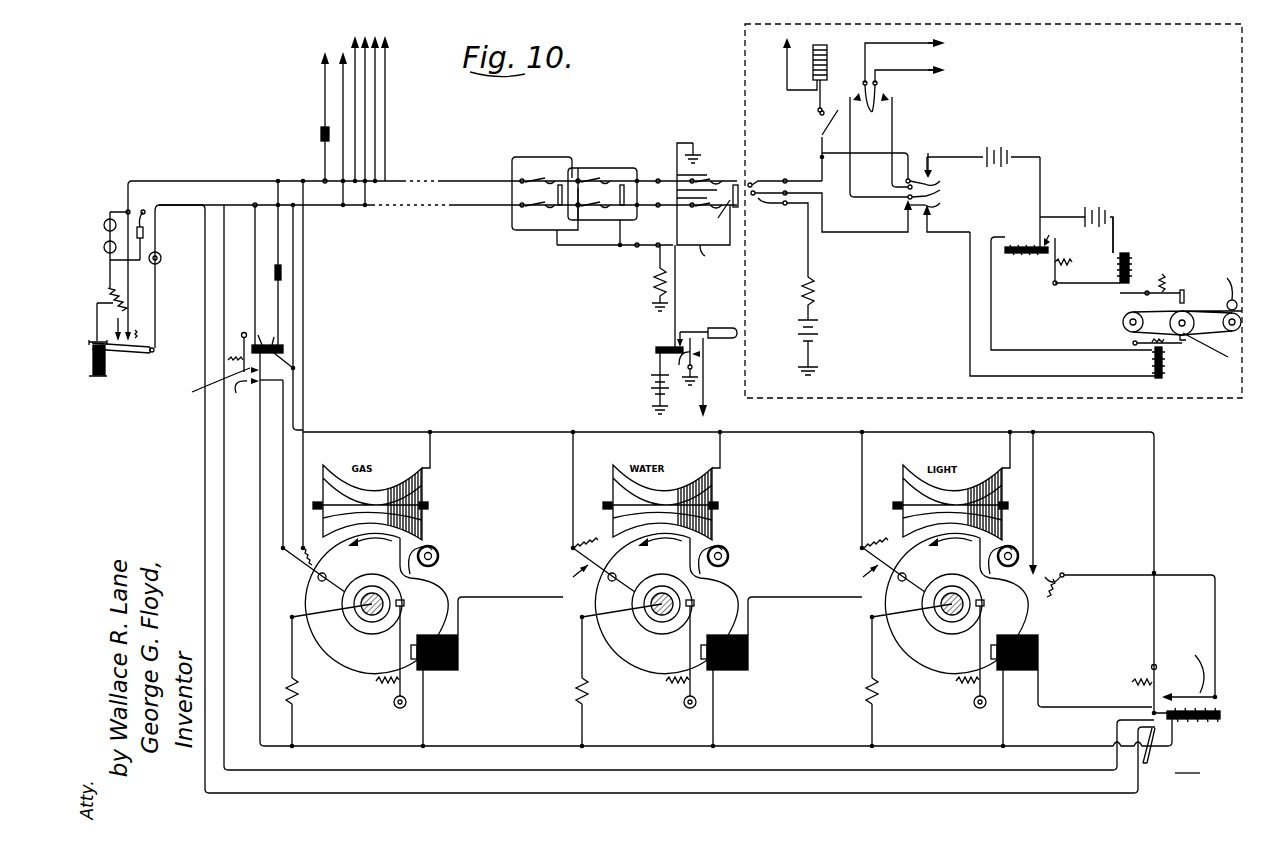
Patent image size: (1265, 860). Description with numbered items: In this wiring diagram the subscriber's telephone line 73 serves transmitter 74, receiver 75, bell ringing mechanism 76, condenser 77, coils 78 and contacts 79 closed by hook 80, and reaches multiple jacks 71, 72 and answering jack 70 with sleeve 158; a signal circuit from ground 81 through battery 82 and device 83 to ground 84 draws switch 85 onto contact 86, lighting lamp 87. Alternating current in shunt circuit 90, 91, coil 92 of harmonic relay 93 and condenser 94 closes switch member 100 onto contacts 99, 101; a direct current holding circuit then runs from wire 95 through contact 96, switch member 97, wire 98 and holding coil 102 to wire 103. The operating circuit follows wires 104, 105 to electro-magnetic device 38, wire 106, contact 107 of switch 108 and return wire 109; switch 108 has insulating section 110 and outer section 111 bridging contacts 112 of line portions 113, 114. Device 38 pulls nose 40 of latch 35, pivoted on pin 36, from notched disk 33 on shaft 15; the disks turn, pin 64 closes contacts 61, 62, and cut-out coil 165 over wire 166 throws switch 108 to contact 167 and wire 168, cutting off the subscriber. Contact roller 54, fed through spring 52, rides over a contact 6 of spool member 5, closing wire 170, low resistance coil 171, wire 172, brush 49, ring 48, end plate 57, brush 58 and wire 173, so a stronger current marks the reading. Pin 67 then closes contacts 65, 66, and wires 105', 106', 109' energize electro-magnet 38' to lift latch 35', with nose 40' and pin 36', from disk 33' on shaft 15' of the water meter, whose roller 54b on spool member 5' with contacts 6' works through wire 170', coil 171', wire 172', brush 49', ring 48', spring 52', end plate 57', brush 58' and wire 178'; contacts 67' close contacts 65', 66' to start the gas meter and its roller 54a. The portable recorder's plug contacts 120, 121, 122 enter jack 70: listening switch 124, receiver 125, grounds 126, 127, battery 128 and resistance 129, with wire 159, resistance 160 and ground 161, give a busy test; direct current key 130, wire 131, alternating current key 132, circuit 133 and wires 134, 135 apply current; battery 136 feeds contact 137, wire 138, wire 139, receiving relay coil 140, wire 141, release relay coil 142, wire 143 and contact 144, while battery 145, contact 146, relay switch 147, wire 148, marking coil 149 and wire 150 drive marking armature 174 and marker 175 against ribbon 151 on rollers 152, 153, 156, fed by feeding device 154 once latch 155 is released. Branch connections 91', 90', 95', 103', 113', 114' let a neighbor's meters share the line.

The spool member 5 is at (950, 493).
The contact 6 is at (976, 489).
The shaft 15 is at (950, 604).
The disk 33 is at (927, 613).
The latch 35 is at (959, 665).
The pin 36 is at (970, 712).
The electro-magnetic device 38 is at (1027, 652).
The nose of the latch 40 is at (991, 648).
The disk or ring 48 is at (944, 615).
The brush 49 is at (950, 551).
The spring 52 is at (999, 576).
The contact roller 54 is at (1006, 545).
The end plate 57 is at (1026, 504).
The brush 58 is at (1020, 502).
The contact 61 is at (1045, 585).
The contact 62 is at (1037, 568).
The pin 64 is at (1048, 600).
The contact 65 is at (906, 563).
The contact 66 is at (859, 559).
The pin 67 is at (885, 579).
The answering jack 70 is at (728, 183).
The multiple jack 71 is at (606, 178).
The multiple jack 72 is at (547, 170).
The telephone line 73 is at (434, 193).
The transmitter 74 is at (161, 261).
The receiver 75 is at (106, 372).
The bell ringing mechanism 76 is at (104, 226).
The condenser 77 is at (140, 226).
The coils 78 is at (108, 288).
The contacts 79 is at (116, 324).
The hook 80 is at (135, 353).
The ground 81 is at (652, 406).
The battery 82 is at (651, 378).
The electro-magnetic switch operating device 83 is at (658, 348).
The ground 84 is at (694, 152).
The switch 85 is at (687, 385).
The contact 86 is at (682, 331).
The lamp 87 is at (720, 328).
The shunt circuit 90 is at (237, 275).
The shunt circuit 91 is at (262, 263).
The coil 92 is at (243, 333).
The harmonic relay device 93 is at (284, 349).
The condenser 94 is at (274, 272).
The wire 95 is at (316, 364).
The switch contact 96 is at (301, 545).
The switch member 97 is at (317, 577).
The wire 98 is at (282, 500).
The relay contact 99 is at (259, 400).
The switch member 100 is at (240, 390).
The contact 101 is at (197, 391).
The holding coil 102 is at (268, 343).
The wire 103 is at (312, 317).
The wire 104 is at (259, 542).
The wire 105 is at (1017, 709).
The wire 106 is at (1095, 688).
The switch contact 107 is at (1152, 712).
The switch 108 is at (1158, 670).
The return wire 109 is at (750, 557).
The insulating piece 110 is at (1118, 721).
The outer section 111 is at (1188, 764).
The contacts 112 is at (1150, 755).
The circuit portion 113 is at (672, 497).
The circuit portion 114 is at (655, 510).
The contact 120 is at (751, 181).
The contact 121 is at (753, 197).
The contact 122 is at (761, 205).
The switch 124 is at (820, 128).
The receiver 125 is at (827, 60).
The ground 126 is at (779, 50).
The ground 127 is at (812, 367).
The battery 128 is at (815, 330).
The resistance 129 is at (811, 289).
The direct current key 130 is at (934, 192).
The wire 131 is at (893, 108).
The alternating current key 132 is at (864, 100).
The alternating current circuit 133 is at (907, 56).
The wire 134 is at (866, 195).
The wire 135 is at (856, 232).
The battery 136 is at (994, 148).
The contact 137 is at (922, 165).
The wire 138 is at (862, 153).
The wire 139 is at (1036, 178).
The coil 140 is at (1017, 256).
The wire 141 is at (992, 341).
The coil 142 is at (1163, 362).
The wire 143 is at (1072, 377).
The contact 144 is at (924, 230).
The battery 145 is at (1097, 207).
The contact 146 is at (1061, 229).
The relay switch 147 is at (1056, 245).
The wire 148 is at (1073, 262).
The coil 149 is at (1130, 262).
The wire 150 is at (1114, 234).
The ribbon 151 is at (1188, 311).
The roller 152 is at (1122, 318).
The roller 153 is at (1226, 330).
The feeding device 154 is at (1205, 346).
The latch 155 is at (1133, 343).
The roller 156 is at (1226, 278).
The jack sleeve 158 is at (712, 216).
The wire 159 is at (701, 251).
The resistance 160 is at (655, 279).
The ground 161 is at (652, 304).
The coil 165 is at (1195, 720).
The wire 166 is at (1122, 576).
The contact 167 is at (1188, 688).
The wire 168 is at (1190, 664).
The wire 170 is at (847, 726).
The low resistance coil 171 is at (844, 690).
The wire 172 is at (848, 646).
The wire 173 is at (1008, 453).
The marking armature 174 is at (1118, 294).
The marker 175 is at (1177, 300).
The field magnet pole 5' is at (660, 491).
The contact 6' is at (683, 485).
The disk shaft 15' is at (660, 604).
The hub 33' is at (636, 613).
The latch 35' is at (661, 665).
The pivot 36' is at (678, 711).
The electro-magnet 38' is at (739, 652).
The link 40' is at (704, 640).
The disk 48' is at (651, 616).
The brush 49' is at (660, 552).
The spring 52' is at (734, 551).
The armature 54b is at (723, 545).
The end plate 57' is at (729, 504).
The brush 58' is at (722, 497).
The contact 65' is at (617, 563).
The contact 66' is at (566, 560).
The contact 67' is at (592, 579).
The wire 105' is at (731, 709).
The wire 106' is at (805, 616).
The wire 109' is at (835, 491).
The wire 170' is at (552, 726).
The resistance coil 171' is at (551, 690).
The wire 172' is at (552, 646).
The wire 178' is at (734, 450).
The armature 54a is at (430, 548).
The circuit connection 90' is at (310, 128).
The circuit connection 91' is at (301, 116).
The circuit connection 95' is at (380, 108).
The circuit connection 103' is at (389, 120).
The circuit connection 113' is at (396, 108).
The circuit connection 114' is at (401, 108).